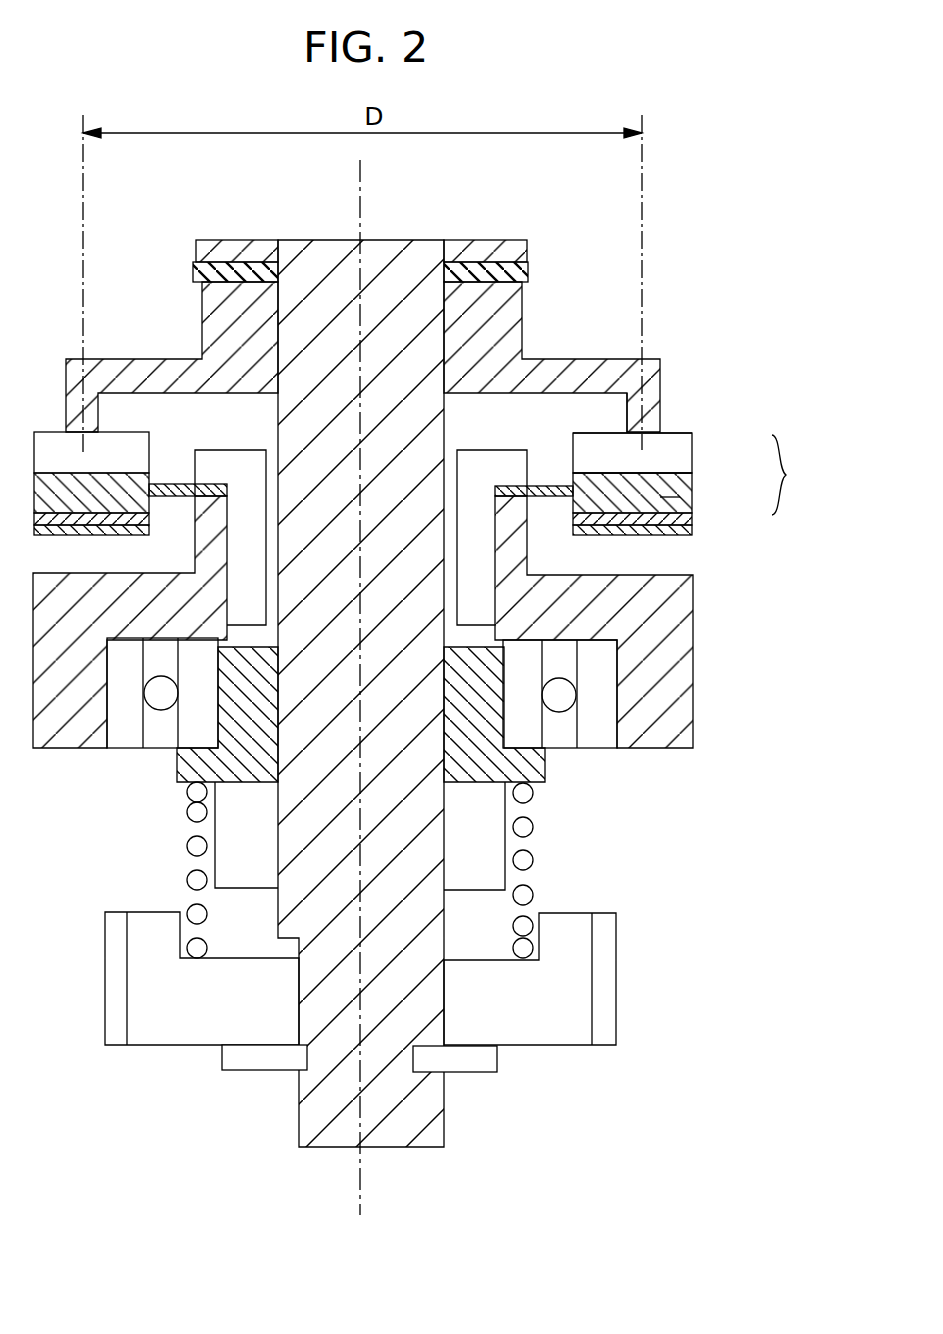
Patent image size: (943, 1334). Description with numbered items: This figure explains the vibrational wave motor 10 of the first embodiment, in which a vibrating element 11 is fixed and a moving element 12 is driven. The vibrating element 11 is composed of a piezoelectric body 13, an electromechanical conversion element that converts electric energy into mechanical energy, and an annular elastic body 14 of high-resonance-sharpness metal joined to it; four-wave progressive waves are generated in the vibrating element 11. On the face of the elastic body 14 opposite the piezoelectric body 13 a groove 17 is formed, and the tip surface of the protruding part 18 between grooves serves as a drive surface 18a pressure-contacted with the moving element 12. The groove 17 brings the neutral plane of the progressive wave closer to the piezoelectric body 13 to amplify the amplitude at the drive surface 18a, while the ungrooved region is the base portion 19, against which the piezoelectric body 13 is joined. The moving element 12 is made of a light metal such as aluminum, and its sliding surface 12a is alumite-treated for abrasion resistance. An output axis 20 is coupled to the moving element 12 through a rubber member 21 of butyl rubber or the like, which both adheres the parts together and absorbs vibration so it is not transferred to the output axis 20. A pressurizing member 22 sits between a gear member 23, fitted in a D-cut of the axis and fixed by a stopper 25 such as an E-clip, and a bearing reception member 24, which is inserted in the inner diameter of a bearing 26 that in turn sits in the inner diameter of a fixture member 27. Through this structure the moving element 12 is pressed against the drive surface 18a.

The vibrational wave motor 10 is at (688, 222).
The vibrating element 11 is at (794, 475).
The moving element 12 is at (660, 373).
The sliding surface 12a is at (634, 433).
The piezoelectric body 13 is at (690, 520).
The elastic body 14 is at (693, 486).
The groove 17 is at (662, 473).
The protruding part 18 is at (582, 457).
The drive surface 18a is at (680, 433).
The base portion 19 is at (680, 497).
The output axis 20 is at (428, 1105).
The rubber member 21 is at (528, 272).
The pressurizing member 22 is at (533, 860).
The gear member 23 is at (605, 975).
The bearing reception member 24 is at (537, 767).
The stopper 25 is at (490, 1058).
The bearing 26 is at (602, 713).
The fixture member 27 is at (673, 636).